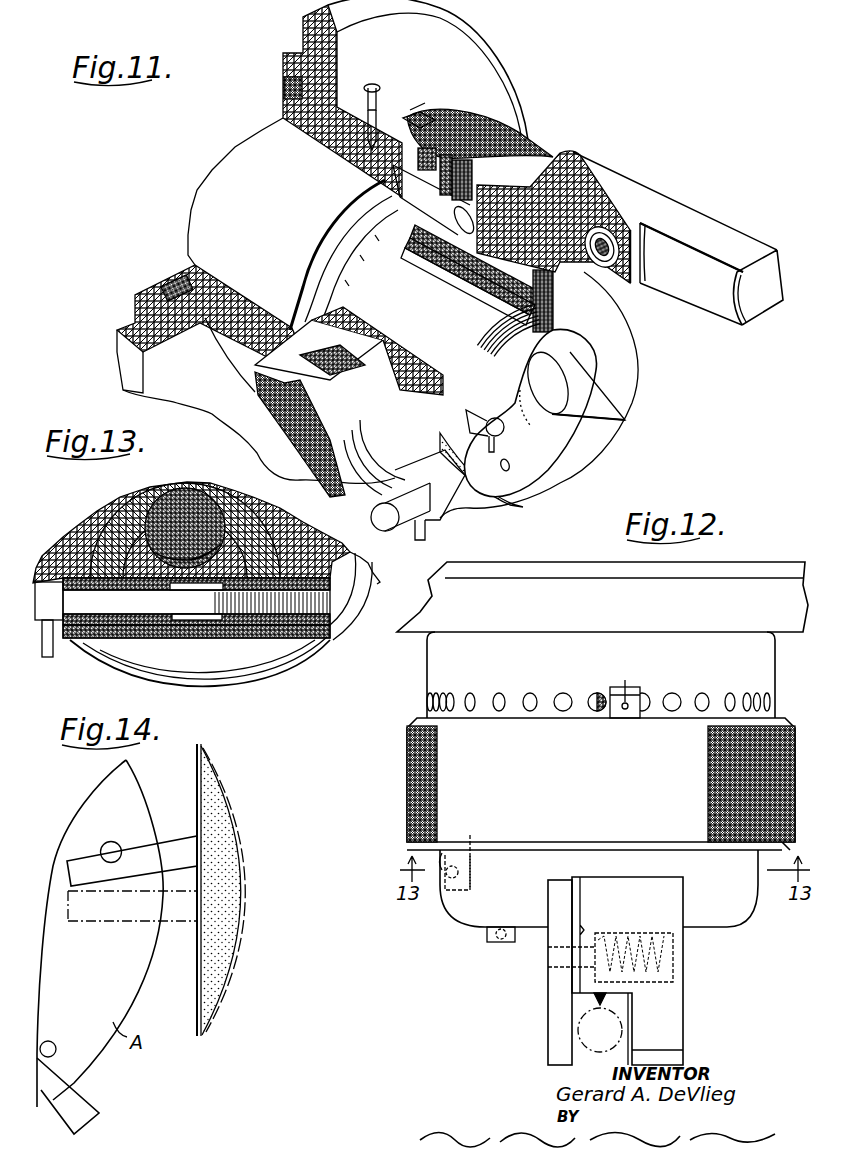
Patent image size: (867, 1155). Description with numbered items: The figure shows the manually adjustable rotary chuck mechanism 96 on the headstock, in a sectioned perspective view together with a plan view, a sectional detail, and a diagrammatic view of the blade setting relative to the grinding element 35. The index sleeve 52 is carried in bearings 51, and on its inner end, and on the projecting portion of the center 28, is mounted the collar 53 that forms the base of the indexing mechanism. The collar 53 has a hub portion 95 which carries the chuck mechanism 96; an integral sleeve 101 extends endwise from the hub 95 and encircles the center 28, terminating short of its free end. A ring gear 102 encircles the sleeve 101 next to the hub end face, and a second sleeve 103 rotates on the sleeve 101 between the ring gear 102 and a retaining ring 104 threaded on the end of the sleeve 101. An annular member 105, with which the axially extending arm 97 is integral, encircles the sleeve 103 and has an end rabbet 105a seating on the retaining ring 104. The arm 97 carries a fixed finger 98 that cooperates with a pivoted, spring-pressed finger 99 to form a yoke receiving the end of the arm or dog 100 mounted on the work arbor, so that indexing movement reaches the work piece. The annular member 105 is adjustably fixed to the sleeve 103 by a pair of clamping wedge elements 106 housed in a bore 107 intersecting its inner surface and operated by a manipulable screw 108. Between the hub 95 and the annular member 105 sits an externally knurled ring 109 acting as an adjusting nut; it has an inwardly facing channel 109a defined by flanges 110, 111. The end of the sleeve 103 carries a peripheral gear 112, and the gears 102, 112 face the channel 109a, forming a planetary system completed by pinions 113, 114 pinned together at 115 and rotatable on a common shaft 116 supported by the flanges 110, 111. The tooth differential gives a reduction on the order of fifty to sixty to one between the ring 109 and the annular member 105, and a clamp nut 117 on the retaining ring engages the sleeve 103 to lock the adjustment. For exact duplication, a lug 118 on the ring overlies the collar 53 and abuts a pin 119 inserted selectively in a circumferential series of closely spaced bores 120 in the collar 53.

In FIG. 11, the center 28 is at (598, 398).
In FIG. 13, the center 28 is at (190, 490).
In FIG. 12, the center 28 is at (596, 1000).
In FIG. 14, the grinding element 35 is at (244, 955).
In FIG. 11, the bearings 51 is at (335, 268).
In FIG. 11, the index sleeve 52 is at (210, 200).
In FIG. 11, the collar 53 is at (318, 138).
In FIG. 12, the collar 53 is at (762, 668).
In FIG. 11, the hub portion 95 is at (378, 205).
In FIG. 11, the rotative chuck mechanism 96 is at (547, 122).
In FIG. 11, the arm 97 is at (633, 181).
In FIG. 12, the arm 97 is at (684, 1007).
In FIG. 11, the fixed finger 98 is at (710, 228).
In FIG. 12, the fixed finger 98 is at (672, 1044).
In FIG. 12, the pivoted spring-pressed finger 99 is at (548, 1050).
In FIG. 12, the arm or dog 100 is at (588, 1024).
In FIG. 11, the sleeve 101 is at (476, 288).
In FIG. 13, the sleeve 101 is at (130, 505).
In FIG. 11, the ring gear 102 is at (428, 262).
In FIG. 11, the second sleeve 103 is at (510, 300).
In FIG. 13, the second sleeve 103 is at (112, 520).
In FIG. 11, the retaining ring 104 is at (568, 312).
In FIG. 11, the annular member 105 is at (588, 160).
In FIG. 13, the annular member 105 is at (78, 530).
In FIG. 11, the end rabbet 105a is at (548, 275).
In FIG. 13, the clamping wedge elements 106 is at (122, 620).
In FIG. 13, the bore 107 is at (195, 620).
In FIG. 11, the manipulable screw 108 is at (440, 528).
In FIG. 13, the manipulable screw 108 is at (75, 605).
In FIG. 12, the manipulable screw 108 is at (440, 890).
In FIG. 11, the externally knurled ring 109 is at (530, 135).
In FIG. 13, the externally knurled ring 109 is at (372, 575).
In FIG. 12, the externally knurled ring 109 is at (407, 788).
In FIG. 11, the inwardly facing channel 109a is at (260, 388).
In FIG. 11, the flange 110 is at (255, 367).
In FIG. 11, the flange 111 is at (300, 440).
In FIG. 11, the peripheral gear 112 is at (452, 280).
In FIG. 11, the pinion 113 is at (450, 140).
In FIG. 11, the pinion 114 is at (458, 150).
In FIG. 11, the pin 115 is at (470, 160).
In FIG. 11, the common shaft 116 is at (420, 230).
In FIG. 11, the clamp nut 117 is at (500, 436).
In FIG. 12, the clamp nut 117 is at (486, 935).
In FIG. 11, the lug 118 is at (395, 113).
In FIG. 12, the lug 118 is at (638, 692).
In FIG. 11, the pin 119 is at (374, 84).
In FIG. 12, the pin 119 is at (598, 694).
In FIG. 12, the bores 120 is at (522, 698).